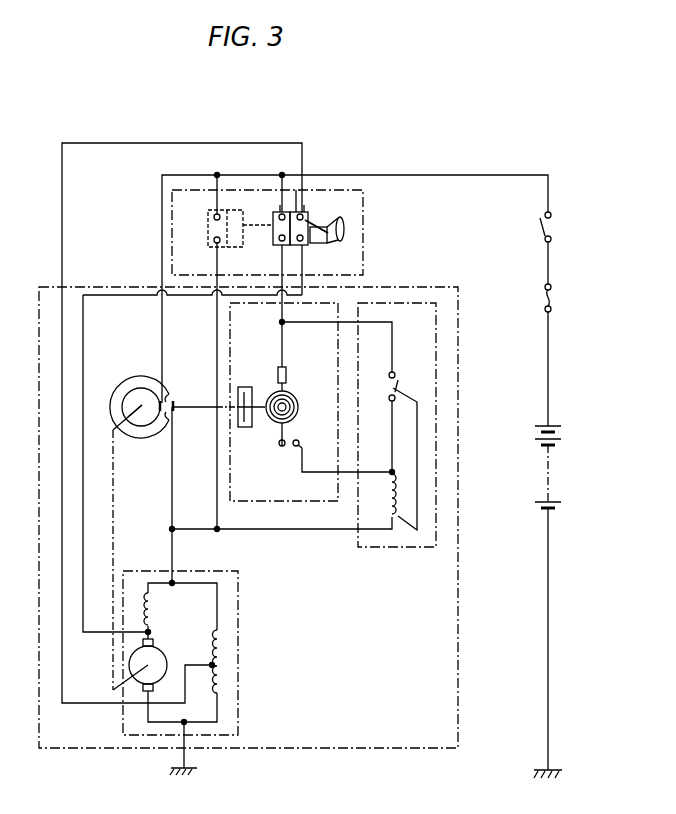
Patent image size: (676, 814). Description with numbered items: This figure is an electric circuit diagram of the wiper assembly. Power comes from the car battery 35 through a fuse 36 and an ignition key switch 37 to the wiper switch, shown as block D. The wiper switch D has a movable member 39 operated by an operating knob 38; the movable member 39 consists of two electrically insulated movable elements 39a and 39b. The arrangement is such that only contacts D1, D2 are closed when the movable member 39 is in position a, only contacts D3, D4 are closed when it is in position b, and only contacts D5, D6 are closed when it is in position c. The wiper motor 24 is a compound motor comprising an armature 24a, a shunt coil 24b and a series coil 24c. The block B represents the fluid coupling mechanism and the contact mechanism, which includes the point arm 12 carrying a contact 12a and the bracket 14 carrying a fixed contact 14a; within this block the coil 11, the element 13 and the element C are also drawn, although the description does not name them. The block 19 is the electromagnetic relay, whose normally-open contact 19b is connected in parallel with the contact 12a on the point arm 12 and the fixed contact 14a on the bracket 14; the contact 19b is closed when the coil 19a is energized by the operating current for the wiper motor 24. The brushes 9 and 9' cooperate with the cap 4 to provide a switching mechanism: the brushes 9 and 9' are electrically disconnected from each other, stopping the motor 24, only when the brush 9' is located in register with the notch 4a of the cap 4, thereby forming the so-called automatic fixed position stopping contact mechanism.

The cap 4 is at (123, 385).
The notch 4a is at (176, 420).
The brush 9 is at (147, 380).
The brush 9' is at (186, 391).
The electromagnetic coil 11 is at (298, 402).
The point arm 12 is at (279, 443).
The contact 12a is at (284, 448).
The resistor 13 is at (287, 372).
The bracket 14 is at (303, 460).
The fixed contact 14a is at (297, 440).
The electromagnetic relay 19 is at (384, 550).
The coil 19a is at (400, 522).
The normally-open contact 19b is at (405, 378).
The wiper motor 24 is at (239, 703).
The armature 24a is at (160, 650).
The shunt coil 24b is at (223, 646).
The series coil 24c is at (143, 594).
The car battery 35 is at (555, 440).
The fuse 36 is at (552, 300).
The ignition key switch 37 is at (552, 222).
The operating knob 38 is at (325, 225).
The movable member 39 is at (296, 212).
The movable element 39a is at (280, 212).
The movable element 39b is at (304, 212).
The position a is at (212, 214).
The position b is at (290, 246).
The position c is at (318, 208).
The block B is at (262, 502).
The capacitor C is at (248, 387).
The wiper switch D is at (365, 203).
The contact D1 is at (212, 219).
The contact D2 is at (213, 244).
The contact D3 is at (278, 216).
The contact D4 is at (278, 240).
The contact D5 is at (330, 242).
The contact D6 is at (303, 244).